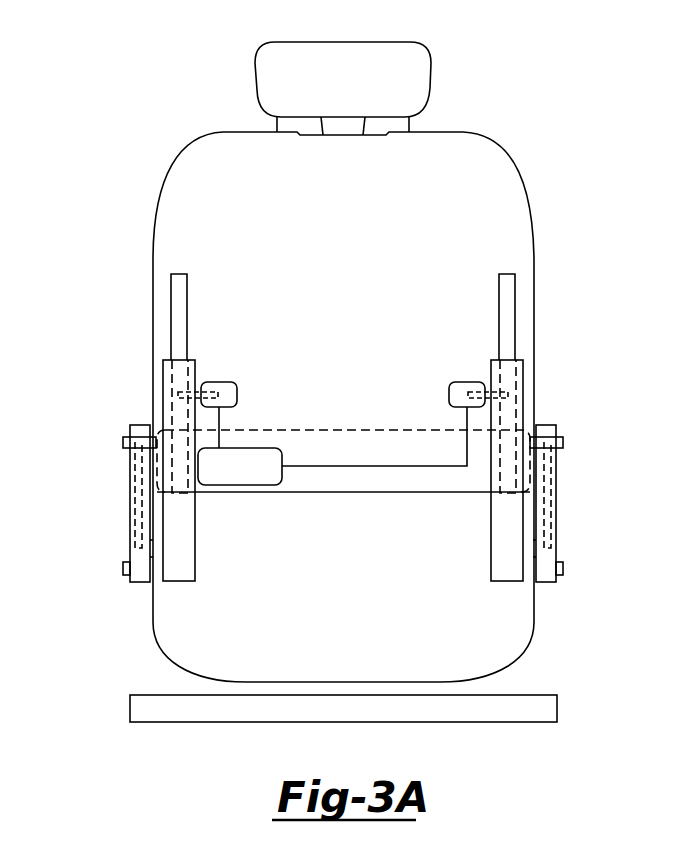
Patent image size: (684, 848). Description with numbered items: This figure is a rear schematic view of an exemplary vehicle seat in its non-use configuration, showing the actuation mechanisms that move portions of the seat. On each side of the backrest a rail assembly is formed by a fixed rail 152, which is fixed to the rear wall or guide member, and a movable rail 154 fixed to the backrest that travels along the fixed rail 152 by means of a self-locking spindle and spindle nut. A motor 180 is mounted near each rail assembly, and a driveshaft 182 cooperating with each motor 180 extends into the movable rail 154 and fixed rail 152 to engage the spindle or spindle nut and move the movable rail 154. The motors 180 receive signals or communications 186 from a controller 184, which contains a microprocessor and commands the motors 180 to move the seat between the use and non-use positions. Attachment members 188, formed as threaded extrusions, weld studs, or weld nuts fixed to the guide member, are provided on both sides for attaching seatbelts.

The fixed rail 152 is at (178, 581).
The movable rail 154 is at (178, 298).
The motor 180 is at (217, 382).
The driveshaft 182 is at (180, 397).
The controller 184 is at (243, 473).
The signals or communications 186 is at (353, 467).
The attachment member 188 is at (123, 572).